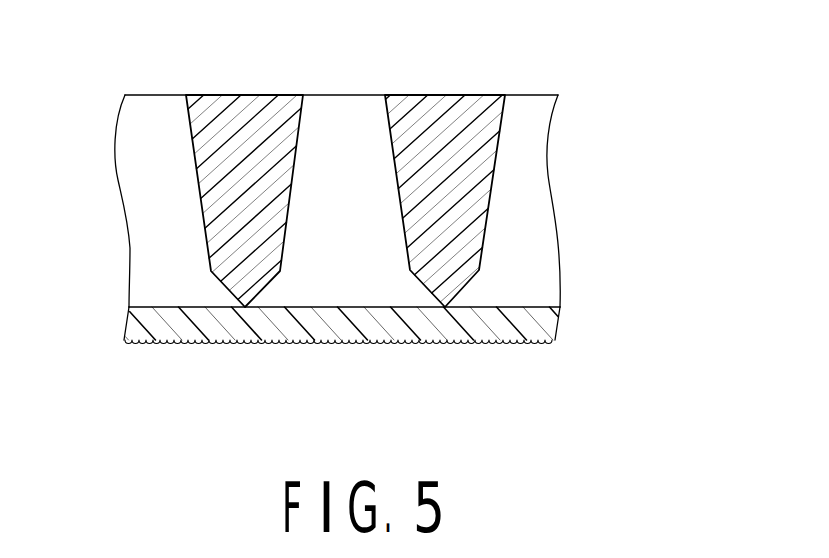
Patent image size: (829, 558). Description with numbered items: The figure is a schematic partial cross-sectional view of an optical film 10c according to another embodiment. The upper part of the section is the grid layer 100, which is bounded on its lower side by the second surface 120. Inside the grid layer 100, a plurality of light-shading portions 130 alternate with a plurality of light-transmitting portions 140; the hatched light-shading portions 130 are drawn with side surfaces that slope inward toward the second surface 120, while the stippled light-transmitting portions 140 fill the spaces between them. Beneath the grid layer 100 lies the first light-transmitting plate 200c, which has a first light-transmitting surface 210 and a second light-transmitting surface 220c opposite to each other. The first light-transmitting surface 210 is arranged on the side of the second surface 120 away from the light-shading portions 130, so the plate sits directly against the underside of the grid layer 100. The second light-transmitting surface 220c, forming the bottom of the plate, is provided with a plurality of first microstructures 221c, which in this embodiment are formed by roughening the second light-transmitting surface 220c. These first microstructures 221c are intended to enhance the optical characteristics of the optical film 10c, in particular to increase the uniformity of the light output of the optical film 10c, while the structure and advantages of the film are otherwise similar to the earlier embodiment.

The optical film 10c is at (88, 25).
The grid layer 100 is at (160, 95).
The light-transmitting portions 140 is at (345, 112).
The light-shading portions 130 is at (444, 114).
The second surface 120 is at (509, 306).
The first light-transmitting plate 200c is at (647, 307).
The first light-transmitting surface 210 is at (536, 310).
The second light-transmitting surface 220c is at (557, 341).
The first microstructures 221c is at (463, 344).